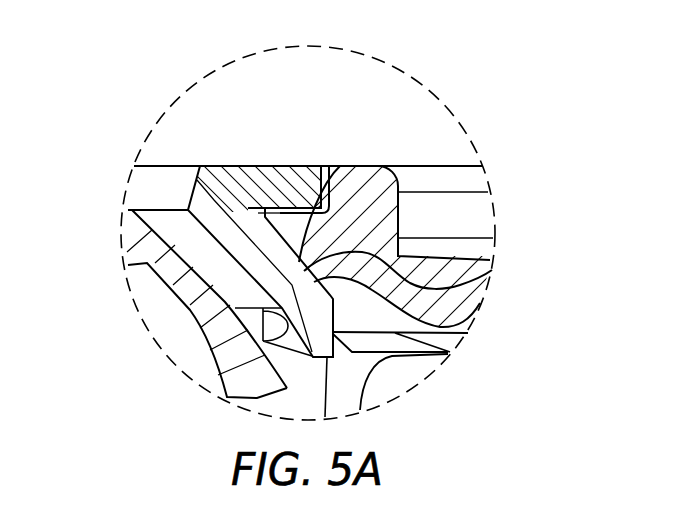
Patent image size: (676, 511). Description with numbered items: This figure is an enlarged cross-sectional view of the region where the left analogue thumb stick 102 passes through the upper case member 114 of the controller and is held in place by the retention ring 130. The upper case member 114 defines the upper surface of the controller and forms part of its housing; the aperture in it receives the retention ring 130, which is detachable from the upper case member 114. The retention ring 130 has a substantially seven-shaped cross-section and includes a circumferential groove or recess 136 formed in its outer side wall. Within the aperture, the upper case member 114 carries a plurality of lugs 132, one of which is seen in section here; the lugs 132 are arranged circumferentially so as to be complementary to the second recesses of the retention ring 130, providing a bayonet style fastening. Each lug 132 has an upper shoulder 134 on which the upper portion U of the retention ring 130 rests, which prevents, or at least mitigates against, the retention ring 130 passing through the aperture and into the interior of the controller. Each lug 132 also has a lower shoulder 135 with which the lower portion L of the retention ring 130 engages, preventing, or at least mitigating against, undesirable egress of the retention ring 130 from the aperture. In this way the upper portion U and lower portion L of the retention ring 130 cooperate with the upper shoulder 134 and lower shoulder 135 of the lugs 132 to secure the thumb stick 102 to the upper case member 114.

The left analogue thumb stick 102 is at (122, 243).
The upper case member 114 is at (383, 210).
The retention ring 130 is at (209, 170).
The lug 132 is at (343, 200).
The upper shoulder 134 is at (313, 213).
The lower shoulder 135 is at (487, 287).
The circumferential groove 136 is at (283, 222).
The upper portion U is at (253, 168).
The lower portion L is at (470, 331).